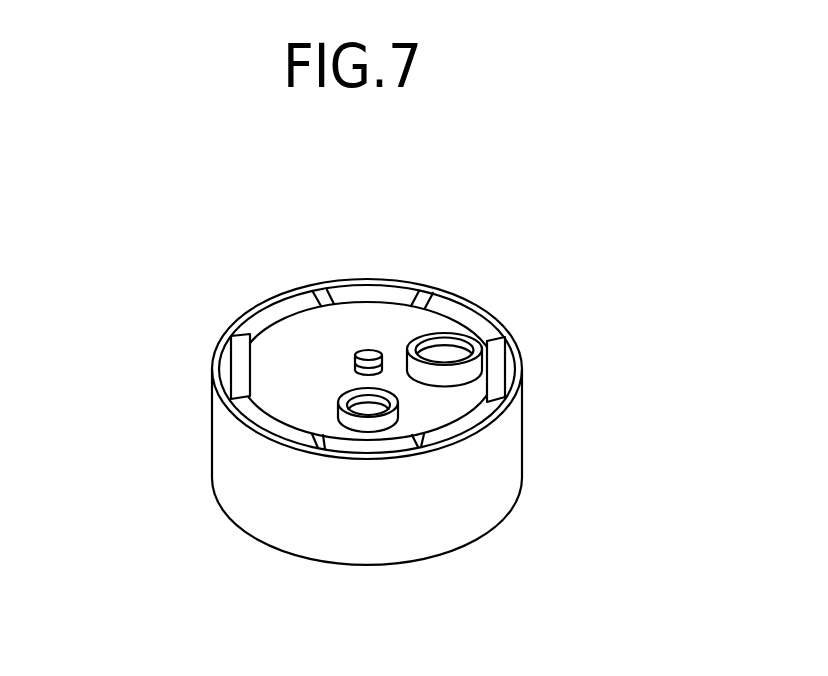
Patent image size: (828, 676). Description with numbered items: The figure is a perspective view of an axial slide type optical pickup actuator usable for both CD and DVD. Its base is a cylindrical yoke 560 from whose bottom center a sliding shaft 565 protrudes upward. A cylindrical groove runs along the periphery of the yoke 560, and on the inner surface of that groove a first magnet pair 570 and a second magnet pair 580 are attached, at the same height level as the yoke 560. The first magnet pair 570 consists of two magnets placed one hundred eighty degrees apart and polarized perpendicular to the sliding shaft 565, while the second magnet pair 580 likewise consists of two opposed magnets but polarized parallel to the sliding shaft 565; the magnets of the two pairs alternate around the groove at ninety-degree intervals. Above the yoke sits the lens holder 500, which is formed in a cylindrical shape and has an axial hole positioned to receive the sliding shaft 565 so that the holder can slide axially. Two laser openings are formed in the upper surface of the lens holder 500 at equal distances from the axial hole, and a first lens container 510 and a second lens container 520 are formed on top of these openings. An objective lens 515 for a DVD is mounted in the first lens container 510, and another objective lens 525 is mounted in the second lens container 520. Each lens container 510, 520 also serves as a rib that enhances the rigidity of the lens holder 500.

The lens holder 500 is at (328, 322).
The first lens container 510 is at (475, 381).
The objective lens 515 is at (457, 348).
The second lens container 520 is at (393, 428).
The objective lens 525 is at (357, 407).
The cylindrical yoke 560 is at (290, 527).
The sliding shaft 565 is at (370, 350).
The first magnet pair 570 is at (268, 310).
The second magnet pair 580 is at (248, 407).